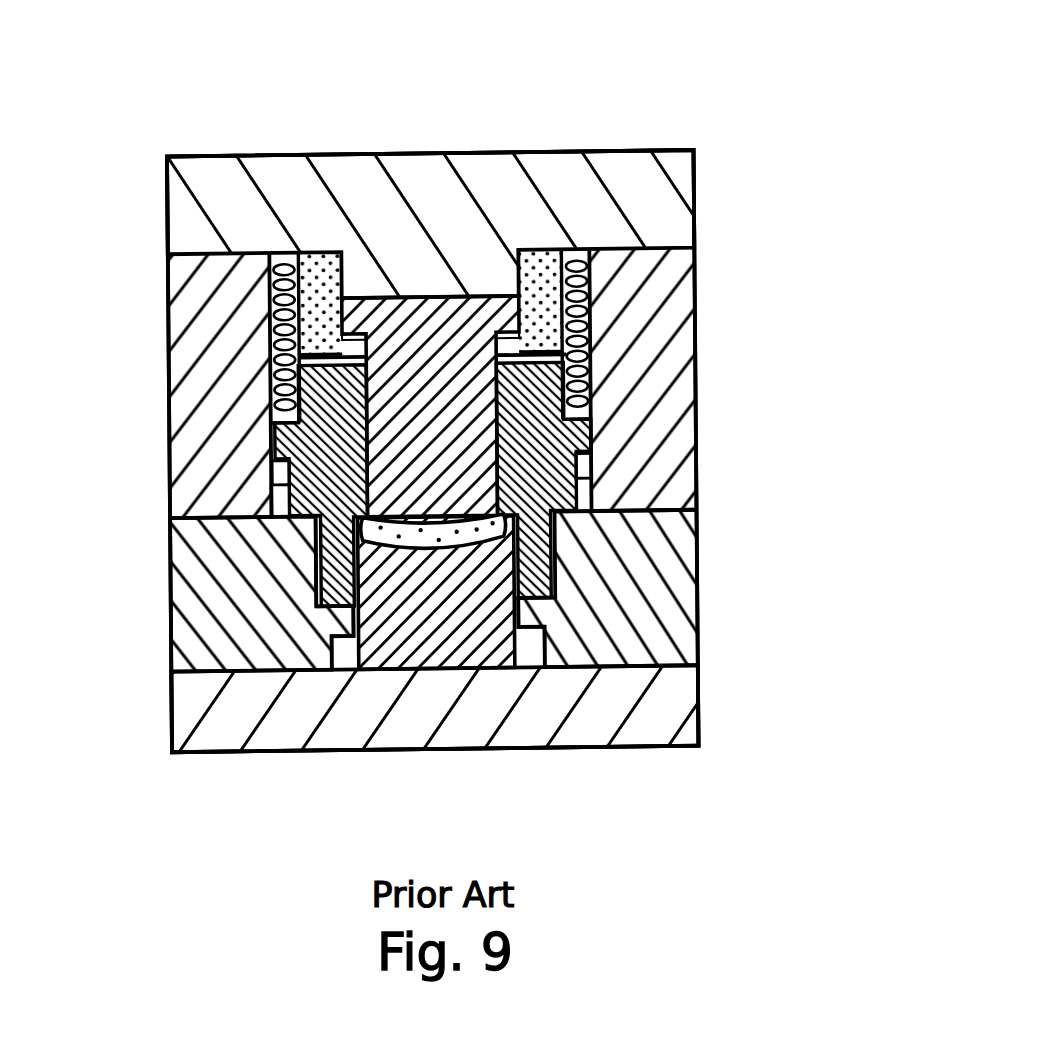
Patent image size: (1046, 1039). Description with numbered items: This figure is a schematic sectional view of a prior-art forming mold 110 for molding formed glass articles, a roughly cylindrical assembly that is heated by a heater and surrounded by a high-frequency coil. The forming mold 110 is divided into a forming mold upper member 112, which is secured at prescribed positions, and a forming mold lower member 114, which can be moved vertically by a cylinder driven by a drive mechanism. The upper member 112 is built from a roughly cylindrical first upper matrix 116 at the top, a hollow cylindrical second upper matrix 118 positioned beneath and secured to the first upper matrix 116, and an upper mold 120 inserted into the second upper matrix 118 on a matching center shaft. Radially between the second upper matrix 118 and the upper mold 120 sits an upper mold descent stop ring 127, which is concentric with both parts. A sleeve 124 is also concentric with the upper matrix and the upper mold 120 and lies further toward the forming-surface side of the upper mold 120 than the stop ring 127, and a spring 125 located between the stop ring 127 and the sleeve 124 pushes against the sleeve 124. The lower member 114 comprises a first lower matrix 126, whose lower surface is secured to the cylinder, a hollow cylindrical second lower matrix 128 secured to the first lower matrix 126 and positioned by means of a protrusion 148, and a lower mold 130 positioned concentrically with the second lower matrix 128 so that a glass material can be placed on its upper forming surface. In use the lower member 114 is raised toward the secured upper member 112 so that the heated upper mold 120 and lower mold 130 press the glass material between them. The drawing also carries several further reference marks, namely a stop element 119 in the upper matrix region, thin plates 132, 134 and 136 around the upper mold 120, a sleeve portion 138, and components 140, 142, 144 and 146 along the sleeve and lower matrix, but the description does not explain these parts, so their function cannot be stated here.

The forming mold 110 is at (614, 124).
The forming mold upper member 112 is at (98, 163).
The forming mold lower member 114 is at (100, 519).
The first upper matrix 116 is at (646, 212).
The second upper matrix 118 is at (640, 430).
The stop block 119 is at (587, 493).
The upper mold 120 is at (440, 357).
The sleeve 124 is at (510, 520).
The spring 125 is at (590, 363).
The first lower matrix 126 is at (625, 742).
The upper mold descent stop ring 127 is at (583, 307).
The second lower matrix 128 is at (650, 606).
The lower mold 130 is at (442, 655).
The left retainer plate 132 is at (357, 272).
The right retainer plate 134 is at (520, 277).
The spacer block 136 is at (287, 252).
The ejector sleeve 138 is at (388, 296).
The spring seat 140 is at (320, 458).
The thin wear plate 142 is at (305, 570).
The sleeve shoulder plate 144 is at (322, 450).
The lower guide wall 146 is at (372, 510).
The protrusion 148 is at (340, 612).